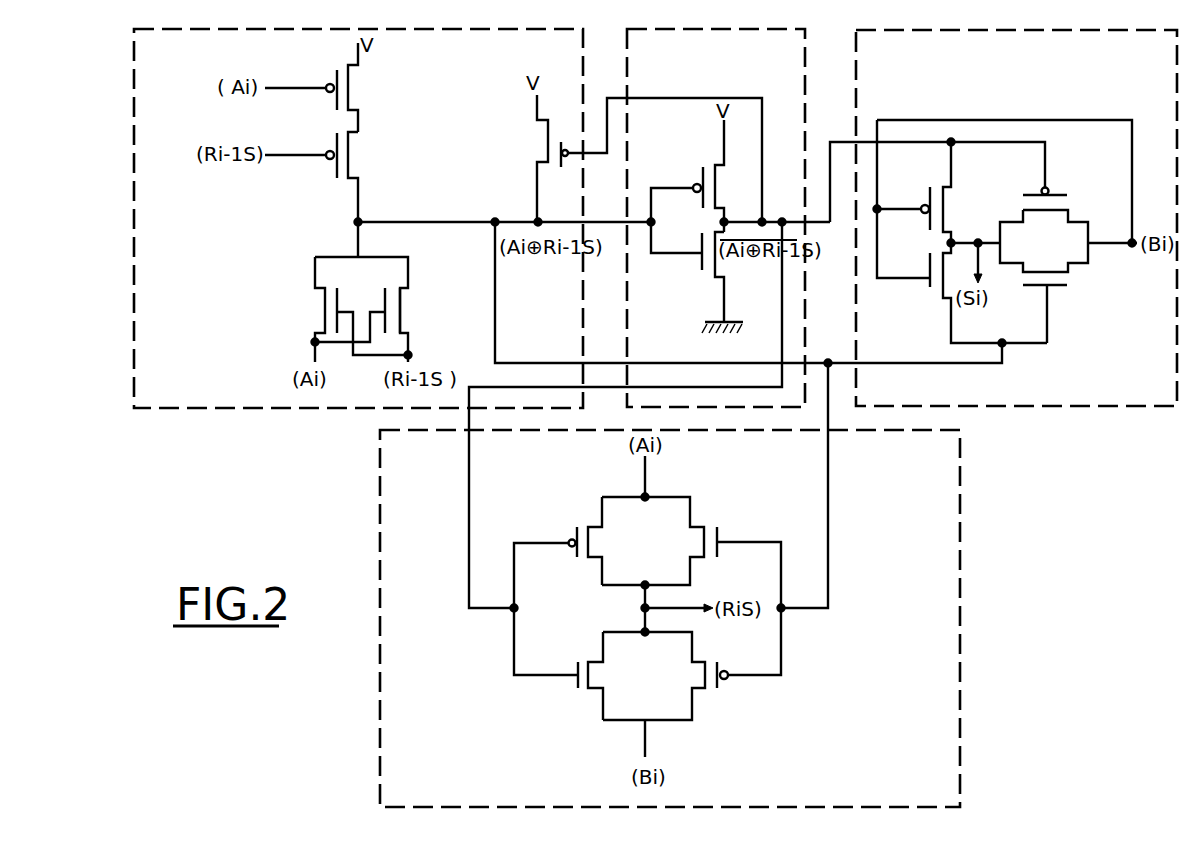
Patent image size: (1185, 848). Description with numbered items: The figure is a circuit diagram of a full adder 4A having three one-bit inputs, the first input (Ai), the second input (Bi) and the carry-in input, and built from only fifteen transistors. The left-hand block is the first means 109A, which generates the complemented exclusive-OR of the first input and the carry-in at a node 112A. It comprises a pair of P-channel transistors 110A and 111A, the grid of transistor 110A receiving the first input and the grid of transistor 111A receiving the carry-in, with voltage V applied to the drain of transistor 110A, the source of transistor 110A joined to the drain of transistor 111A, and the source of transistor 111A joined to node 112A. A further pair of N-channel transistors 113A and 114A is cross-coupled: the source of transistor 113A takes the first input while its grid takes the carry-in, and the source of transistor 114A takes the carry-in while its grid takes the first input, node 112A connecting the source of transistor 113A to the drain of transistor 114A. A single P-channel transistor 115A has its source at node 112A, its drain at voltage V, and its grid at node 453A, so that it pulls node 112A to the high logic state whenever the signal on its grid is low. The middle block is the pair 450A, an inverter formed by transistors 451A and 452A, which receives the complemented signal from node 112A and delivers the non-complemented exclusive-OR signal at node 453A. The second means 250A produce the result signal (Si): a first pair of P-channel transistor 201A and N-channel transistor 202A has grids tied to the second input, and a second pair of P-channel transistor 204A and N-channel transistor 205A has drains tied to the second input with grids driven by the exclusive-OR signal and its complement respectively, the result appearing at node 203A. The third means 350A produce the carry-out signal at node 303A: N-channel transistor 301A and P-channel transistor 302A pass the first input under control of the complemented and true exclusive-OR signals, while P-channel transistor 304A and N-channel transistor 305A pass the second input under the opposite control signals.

The adder 4A is at (973, 457).
The first means 109A is at (545, 30).
The P-channel transistor 110A is at (350, 92).
The P-channel transistor 111A is at (350, 158).
The node 112A is at (482, 223).
The N-channel transistor 113A is at (323, 306).
The N-channel transistor 114A is at (409, 310).
The P-channel transistor 115A is at (548, 130).
The pair of transistors 450A is at (773, 30).
The transistor 451A is at (703, 176).
The transistor 452A is at (703, 265).
The node 453A is at (732, 221).
The second means 250A is at (1148, 32).
The P-channel transistor 201A is at (930, 192).
The N-channel transistor 202A is at (930, 288).
The node 203A is at (978, 243).
The P-channel transistor 204A is at (1058, 178).
The N-channel transistor 205A is at (1053, 283).
The third means 350A is at (913, 805).
The N-channel transistor 301A is at (717, 536).
The P-channel transistor 302A is at (571, 540).
The node 303A is at (651, 608).
The P-channel transistor 304A is at (724, 680).
The N-channel transistor 305A is at (578, 690).